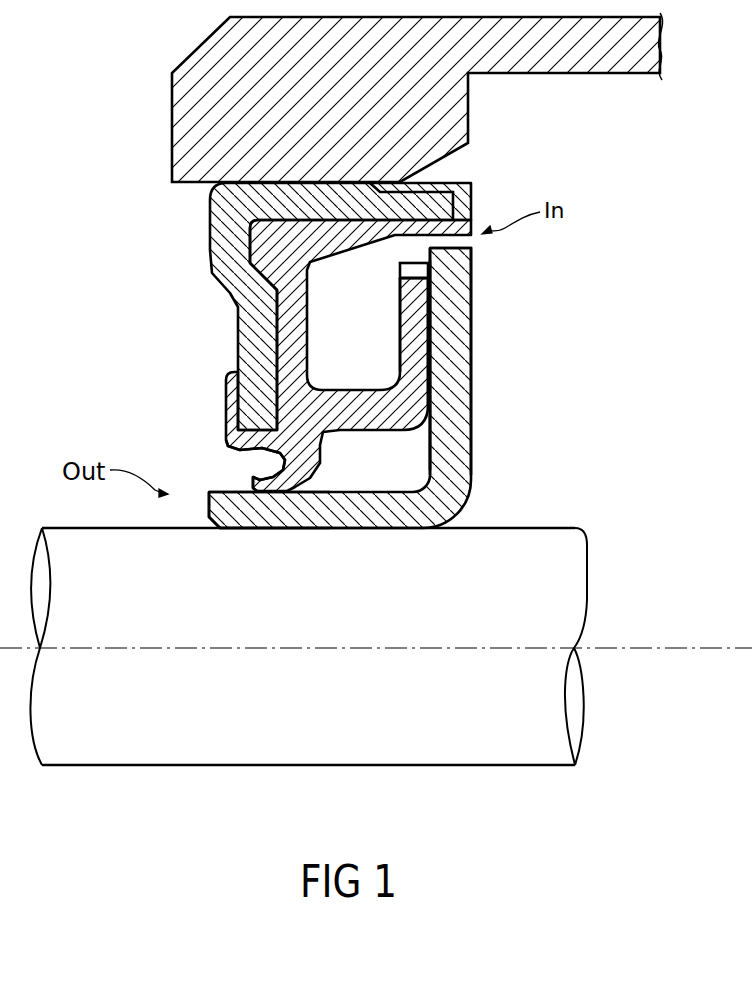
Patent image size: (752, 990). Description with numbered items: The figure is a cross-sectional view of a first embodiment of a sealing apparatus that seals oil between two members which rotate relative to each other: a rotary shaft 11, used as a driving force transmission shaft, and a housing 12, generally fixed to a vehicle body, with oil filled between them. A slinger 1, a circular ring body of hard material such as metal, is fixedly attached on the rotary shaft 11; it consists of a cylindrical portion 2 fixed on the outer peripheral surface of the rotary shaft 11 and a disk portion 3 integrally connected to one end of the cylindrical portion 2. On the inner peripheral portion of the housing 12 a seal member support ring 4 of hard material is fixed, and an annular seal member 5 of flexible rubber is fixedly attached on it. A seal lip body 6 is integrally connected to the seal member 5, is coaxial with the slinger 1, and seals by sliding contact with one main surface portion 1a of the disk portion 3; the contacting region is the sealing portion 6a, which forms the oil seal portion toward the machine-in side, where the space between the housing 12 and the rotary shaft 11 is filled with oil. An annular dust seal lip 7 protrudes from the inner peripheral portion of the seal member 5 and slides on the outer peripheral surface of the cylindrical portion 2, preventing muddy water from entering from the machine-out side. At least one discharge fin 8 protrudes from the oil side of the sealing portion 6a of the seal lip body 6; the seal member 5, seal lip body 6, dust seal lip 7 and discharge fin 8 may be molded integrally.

The slinger 1 is at (472, 425).
The one main surface portion 1a is at (430, 410).
The cylindrical portion 2 is at (233, 497).
The disk portion 3 is at (455, 305).
The seal member support ring 4 is at (221, 215).
The seal member 5 is at (278, 282).
The seal lip body 6 is at (430, 342).
The sealing portion 6a is at (430, 278).
The dust seal lip 7 is at (230, 480).
The discharge fin 8 is at (413, 270).
The rotary shaft 11 is at (520, 528).
The housing 12 is at (497, 75).